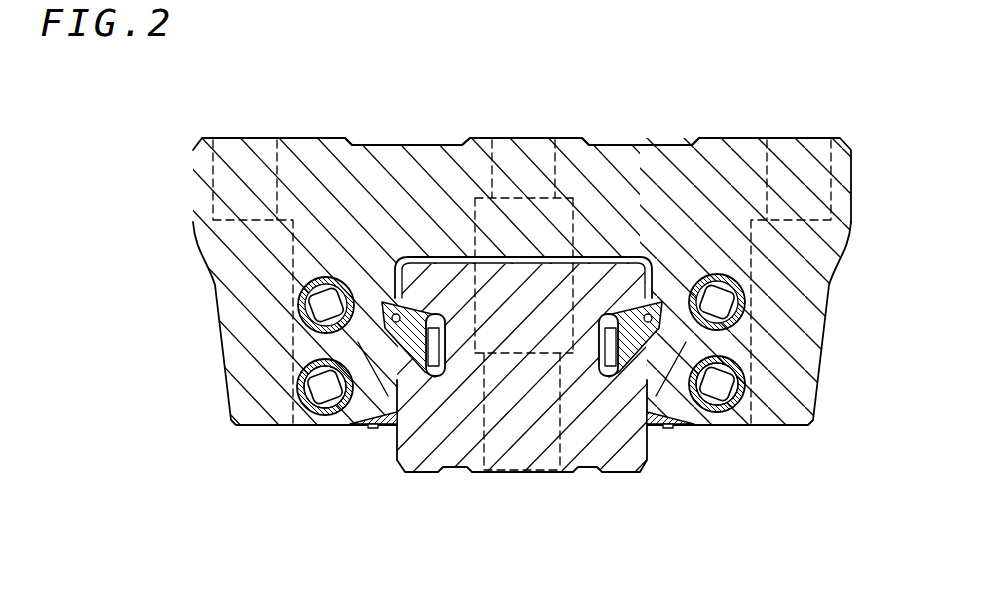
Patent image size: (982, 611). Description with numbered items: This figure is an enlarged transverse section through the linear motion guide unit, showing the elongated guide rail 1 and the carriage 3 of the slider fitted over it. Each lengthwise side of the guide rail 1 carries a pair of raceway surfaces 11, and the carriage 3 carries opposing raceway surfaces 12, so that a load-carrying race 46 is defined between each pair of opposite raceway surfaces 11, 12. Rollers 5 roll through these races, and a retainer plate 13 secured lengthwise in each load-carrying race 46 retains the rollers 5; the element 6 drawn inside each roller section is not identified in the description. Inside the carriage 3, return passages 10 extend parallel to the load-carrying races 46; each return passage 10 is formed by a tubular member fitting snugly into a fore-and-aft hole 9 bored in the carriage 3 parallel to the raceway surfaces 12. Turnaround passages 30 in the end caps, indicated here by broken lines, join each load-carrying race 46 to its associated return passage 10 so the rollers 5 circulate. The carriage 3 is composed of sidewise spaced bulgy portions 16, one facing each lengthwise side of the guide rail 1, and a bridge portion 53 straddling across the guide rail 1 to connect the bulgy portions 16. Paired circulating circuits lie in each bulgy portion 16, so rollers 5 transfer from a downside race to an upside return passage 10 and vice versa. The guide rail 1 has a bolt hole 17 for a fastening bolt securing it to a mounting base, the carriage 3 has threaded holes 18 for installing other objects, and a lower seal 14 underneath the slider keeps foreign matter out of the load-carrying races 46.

The guide rail 1 is at (500, 427).
The carriage 3 is at (657, 182).
The roller 5 is at (731, 276).
The rolling element 6 is at (344, 283).
The fore-and-aft hole 9 is at (320, 389).
The return passage 10 is at (740, 318).
The raceway surface 11 is at (385, 294).
The raceway surface 12 is at (393, 387).
The retainer plate 13 is at (427, 382).
The lower seal 14 is at (668, 424).
The bulgy portion 16 is at (257, 303).
The bolt hole 17 is at (556, 430).
The threaded hole 18 is at (226, 165).
The turnaround passage 30 is at (338, 349).
The load-carrying race 46 is at (422, 292).
The bridge portion 53 is at (417, 187).